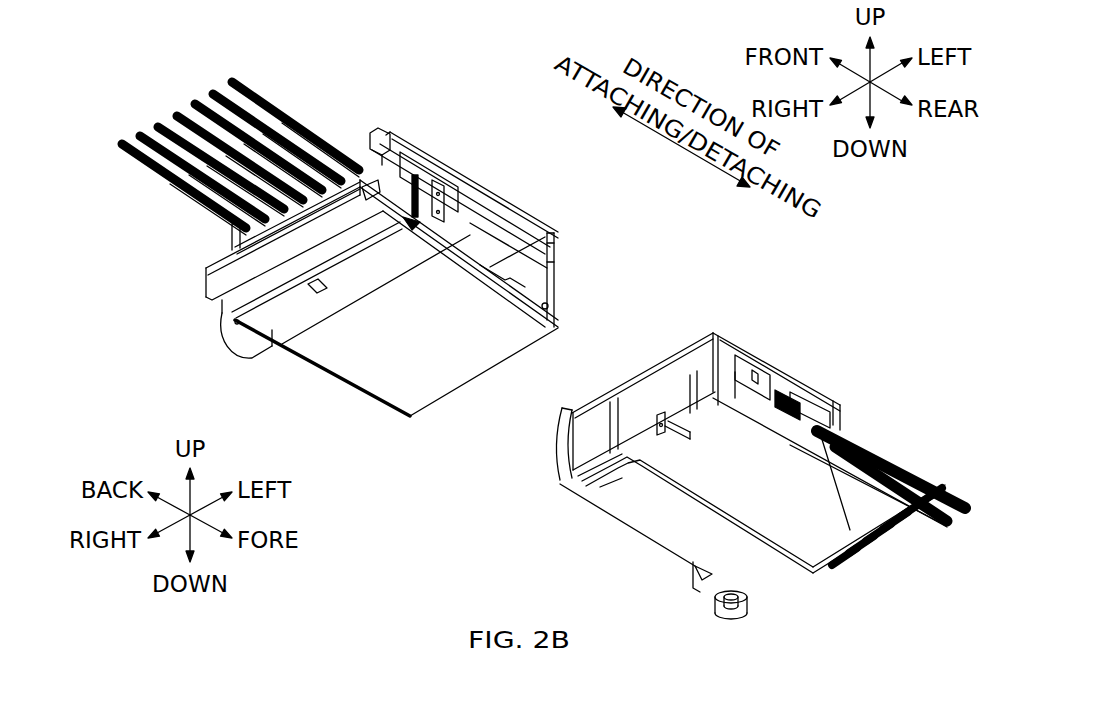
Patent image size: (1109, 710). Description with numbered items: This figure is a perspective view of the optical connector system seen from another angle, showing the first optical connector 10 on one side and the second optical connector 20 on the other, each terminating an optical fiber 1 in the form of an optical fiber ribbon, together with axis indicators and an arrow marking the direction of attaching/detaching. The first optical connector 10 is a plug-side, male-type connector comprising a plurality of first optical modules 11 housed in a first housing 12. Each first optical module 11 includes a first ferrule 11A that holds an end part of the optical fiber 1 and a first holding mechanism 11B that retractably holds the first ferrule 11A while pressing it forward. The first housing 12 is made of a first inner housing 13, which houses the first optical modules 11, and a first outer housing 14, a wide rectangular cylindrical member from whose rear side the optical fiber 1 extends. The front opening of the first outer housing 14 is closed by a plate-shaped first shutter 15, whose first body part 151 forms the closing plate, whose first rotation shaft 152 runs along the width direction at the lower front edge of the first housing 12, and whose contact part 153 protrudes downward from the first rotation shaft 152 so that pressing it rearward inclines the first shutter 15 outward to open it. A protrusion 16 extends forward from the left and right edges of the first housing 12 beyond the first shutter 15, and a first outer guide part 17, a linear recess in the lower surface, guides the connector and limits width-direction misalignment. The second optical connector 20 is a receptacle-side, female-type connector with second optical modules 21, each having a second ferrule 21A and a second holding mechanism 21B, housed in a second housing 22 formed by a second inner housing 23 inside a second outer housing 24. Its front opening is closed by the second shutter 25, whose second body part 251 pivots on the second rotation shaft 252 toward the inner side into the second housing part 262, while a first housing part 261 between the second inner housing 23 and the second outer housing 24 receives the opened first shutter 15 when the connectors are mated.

The optical fiber 1 is at (947, 487).
The first optical connector 10 is at (919, 380).
The first optical module 11 is at (850, 311).
The first ferrule 11A is at (747, 367).
The first holding mechanism 11B is at (815, 393).
The first housing 12 is at (915, 575).
The first inner housing 13 is at (822, 540).
The first outer housing 14 is at (727, 368).
The first shutter 15 is at (696, 297).
The first body part 151 is at (592, 420).
The first rotation shaft 152 is at (660, 412).
The contact part 153 is at (642, 465).
The protrusion 16 is at (562, 438).
The first outer guide part 17 is at (692, 493).
The second optical connector 20 is at (188, 322).
The second optical module 21 is at (556, 128).
The second ferrule 21A is at (462, 198).
The second holding mechanism 21B is at (387, 132).
The second housing 22 is at (365, 443).
The second inner housing 23 is at (375, 222).
The second outer housing 24 is at (372, 357).
The second shutter 25 is at (622, 232).
The second body part 251 is at (555, 243).
The second rotation shaft 252 is at (555, 263).
The first housing part 261 is at (430, 250).
The second housing part 262 is at (505, 270).